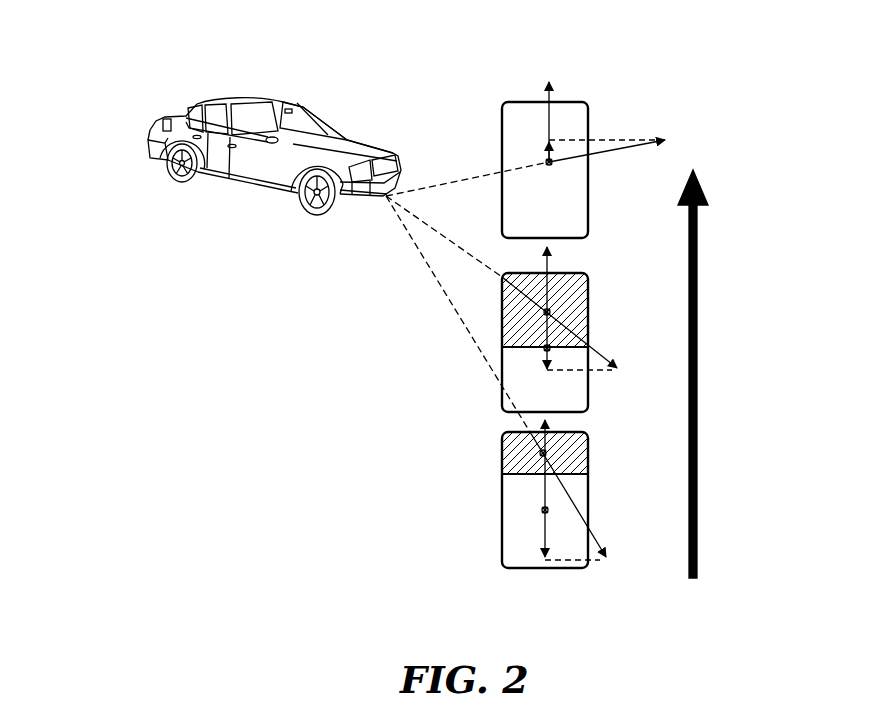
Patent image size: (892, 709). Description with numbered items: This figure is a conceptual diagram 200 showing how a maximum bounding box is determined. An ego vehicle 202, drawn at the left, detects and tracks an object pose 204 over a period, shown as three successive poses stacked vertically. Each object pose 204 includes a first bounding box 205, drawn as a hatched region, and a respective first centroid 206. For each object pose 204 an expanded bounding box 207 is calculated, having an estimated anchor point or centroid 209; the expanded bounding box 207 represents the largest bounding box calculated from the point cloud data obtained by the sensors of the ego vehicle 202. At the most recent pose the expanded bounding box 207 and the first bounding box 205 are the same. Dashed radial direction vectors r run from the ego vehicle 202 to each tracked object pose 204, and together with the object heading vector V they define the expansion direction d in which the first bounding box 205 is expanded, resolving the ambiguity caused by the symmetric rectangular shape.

The conceptual diagram 200 is at (362, 65).
The ego vehicle 202 is at (171, 111).
The object pose 204 is at (497, 91).
The first bounding box 205 is at (575, 304).
The first centroid 206 is at (548, 166).
The expanded bounding box 207 is at (586, 222).
The estimated centroid 209 is at (553, 166).